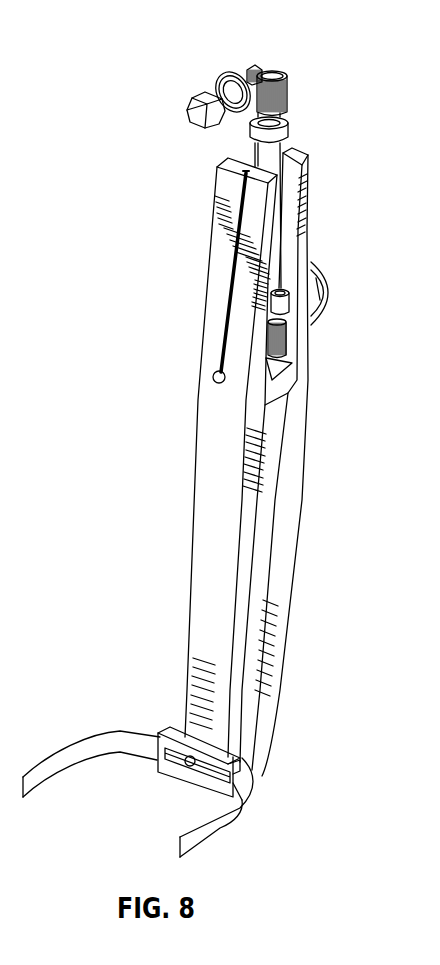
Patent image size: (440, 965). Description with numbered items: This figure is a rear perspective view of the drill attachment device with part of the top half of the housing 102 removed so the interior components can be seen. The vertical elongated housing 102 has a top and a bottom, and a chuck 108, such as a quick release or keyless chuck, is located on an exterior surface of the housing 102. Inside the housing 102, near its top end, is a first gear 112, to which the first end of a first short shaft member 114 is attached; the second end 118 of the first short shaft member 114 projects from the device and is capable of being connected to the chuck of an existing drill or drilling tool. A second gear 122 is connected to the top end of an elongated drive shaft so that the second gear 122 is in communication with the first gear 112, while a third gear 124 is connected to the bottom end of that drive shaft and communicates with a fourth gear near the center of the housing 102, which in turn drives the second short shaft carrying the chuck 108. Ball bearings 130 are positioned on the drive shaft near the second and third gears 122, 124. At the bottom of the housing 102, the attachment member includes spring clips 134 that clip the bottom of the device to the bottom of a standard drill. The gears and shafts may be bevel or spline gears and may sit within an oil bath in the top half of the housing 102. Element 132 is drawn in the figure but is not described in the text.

The vertical elongated housing 102 is at (285, 502).
The chuck 108 is at (330, 285).
The first gear 112 is at (250, 70).
The first short shaft member 114 is at (228, 88).
The second end of first short shaft member 118 is at (196, 113).
The second gear 122 is at (285, 97).
The third gear 124 is at (285, 337).
The ball bearings 130 is at (283, 132).
The slide knob 132 is at (212, 375).
The spring clips 134 is at (53, 775).